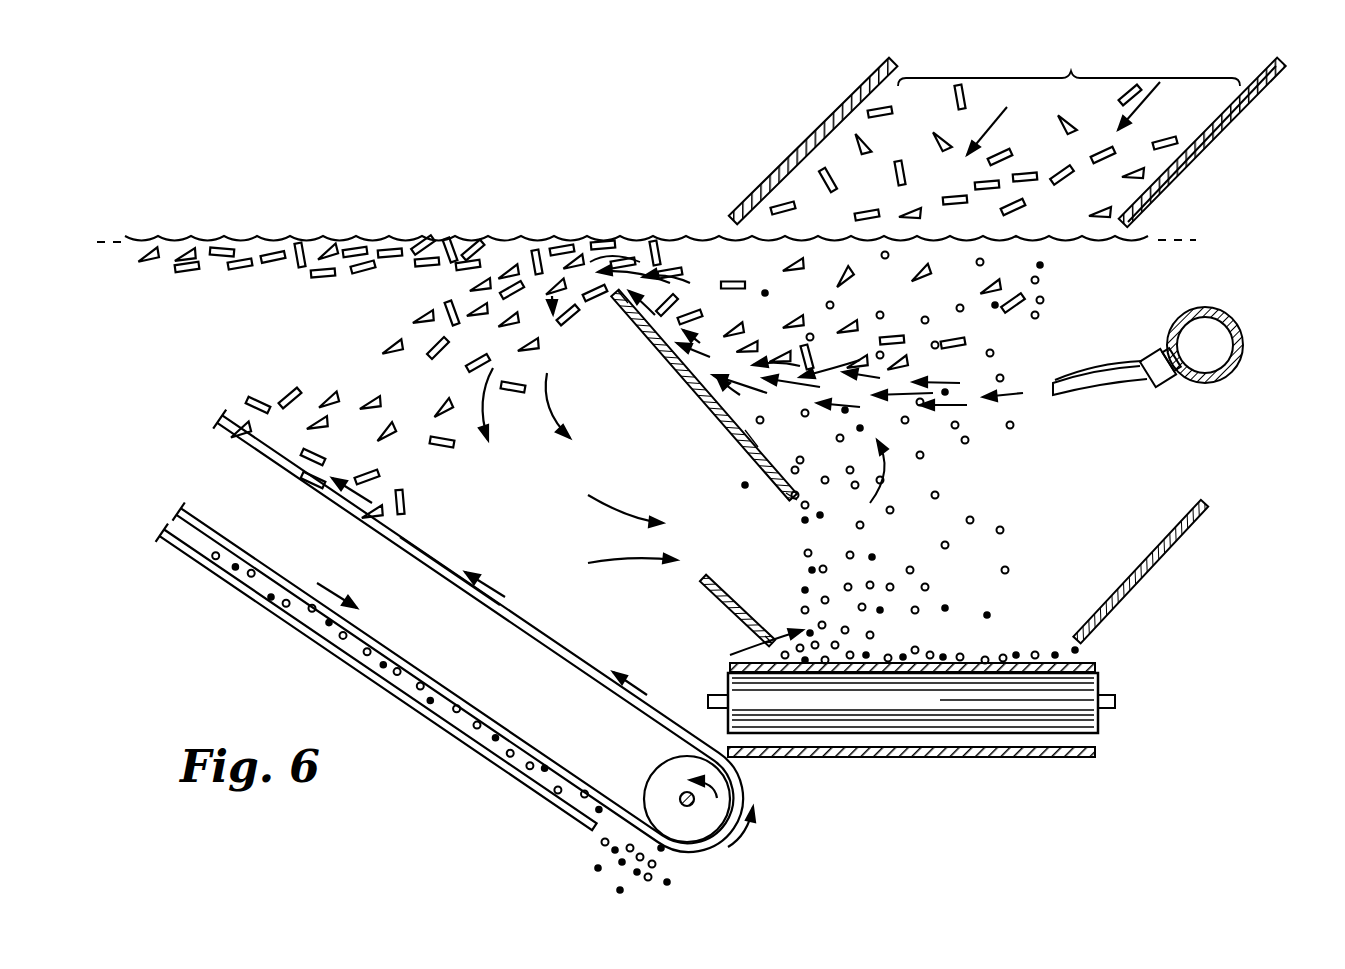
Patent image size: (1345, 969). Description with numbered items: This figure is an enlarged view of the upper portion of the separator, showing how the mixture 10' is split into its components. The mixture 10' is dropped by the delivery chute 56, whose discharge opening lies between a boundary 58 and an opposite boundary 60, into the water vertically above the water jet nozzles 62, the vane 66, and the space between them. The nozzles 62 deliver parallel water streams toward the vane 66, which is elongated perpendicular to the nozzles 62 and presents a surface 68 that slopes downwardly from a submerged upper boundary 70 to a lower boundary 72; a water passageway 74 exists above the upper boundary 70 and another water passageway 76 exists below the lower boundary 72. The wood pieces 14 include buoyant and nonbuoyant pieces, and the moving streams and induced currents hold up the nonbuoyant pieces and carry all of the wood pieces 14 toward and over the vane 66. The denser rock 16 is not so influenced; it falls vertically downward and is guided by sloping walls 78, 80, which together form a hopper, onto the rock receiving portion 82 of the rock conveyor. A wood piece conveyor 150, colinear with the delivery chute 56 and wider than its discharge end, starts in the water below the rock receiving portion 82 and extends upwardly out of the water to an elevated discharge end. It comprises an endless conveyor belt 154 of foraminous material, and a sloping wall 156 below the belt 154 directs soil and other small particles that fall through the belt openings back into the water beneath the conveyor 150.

The mixture 10' is at (1005, 134).
The wood pieces 14 is at (337, 263).
The rock 16 is at (987, 530).
The delivery chute 56 is at (1247, 112).
The boundary 58 is at (1187, 167).
The opposite boundary 60 is at (817, 130).
The water jet nozzles 62 is at (1113, 398).
The vane 66 is at (720, 427).
The surface 68 is at (757, 437).
The upper boundary 70 is at (600, 302).
The lower boundary 72 is at (790, 498).
The water passageway 74 is at (603, 257).
The water passageway 76 is at (712, 565).
The wall 78 is at (745, 630).
The wall 80 is at (1163, 557).
The rock receiving portion 82 is at (1073, 657).
The wood piece conveyor 150 is at (432, 557).
The endless conveyor belt 154 is at (520, 623).
The sloping wall 156 is at (307, 633).